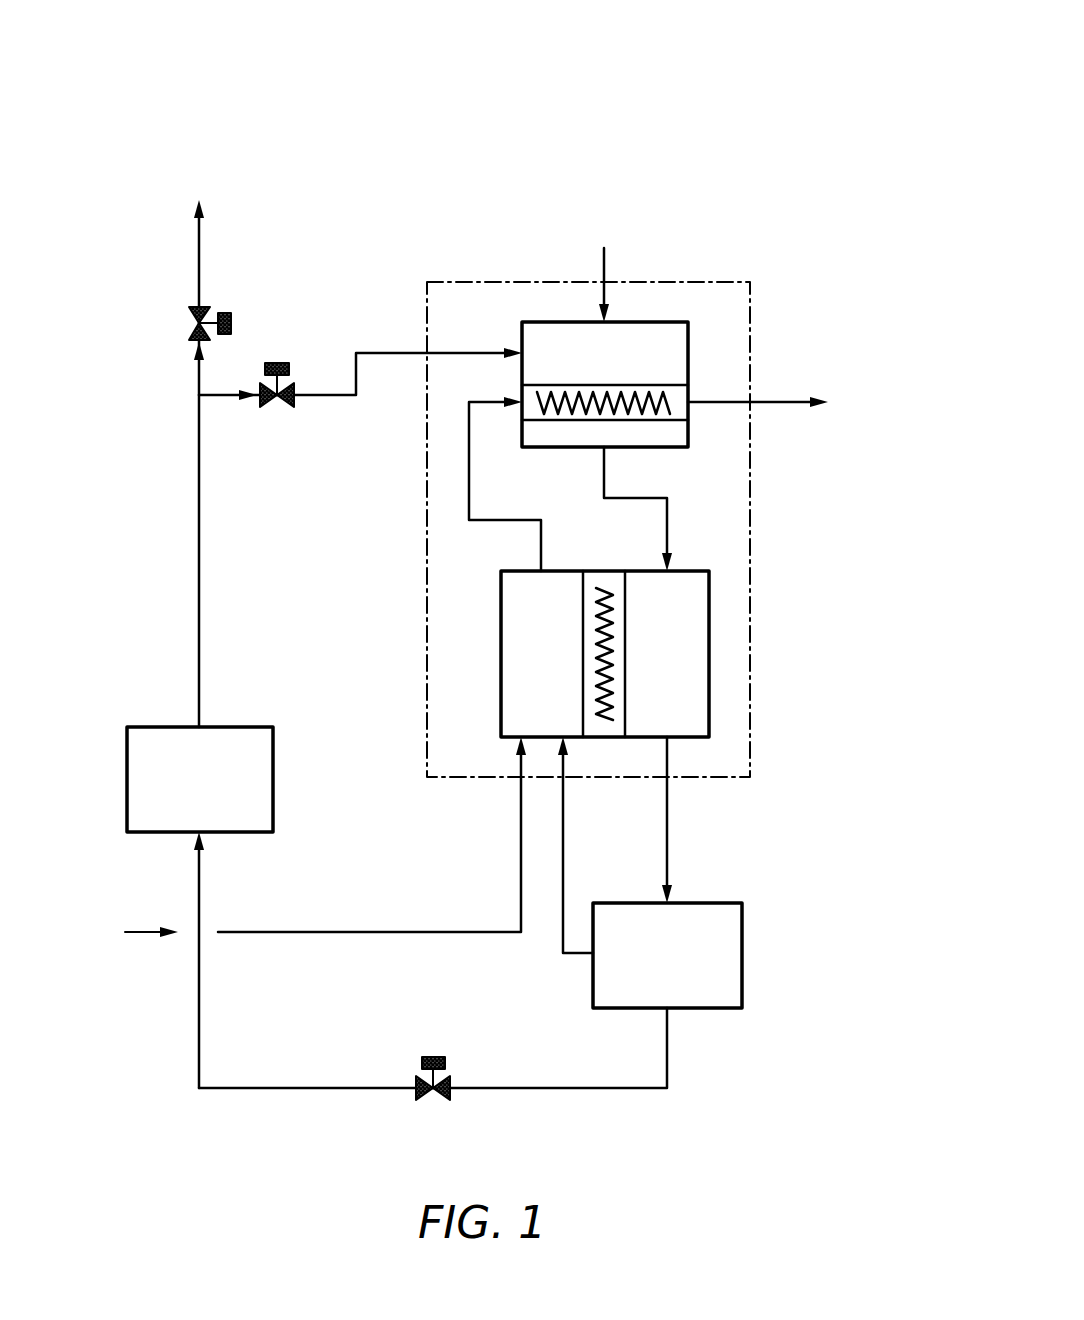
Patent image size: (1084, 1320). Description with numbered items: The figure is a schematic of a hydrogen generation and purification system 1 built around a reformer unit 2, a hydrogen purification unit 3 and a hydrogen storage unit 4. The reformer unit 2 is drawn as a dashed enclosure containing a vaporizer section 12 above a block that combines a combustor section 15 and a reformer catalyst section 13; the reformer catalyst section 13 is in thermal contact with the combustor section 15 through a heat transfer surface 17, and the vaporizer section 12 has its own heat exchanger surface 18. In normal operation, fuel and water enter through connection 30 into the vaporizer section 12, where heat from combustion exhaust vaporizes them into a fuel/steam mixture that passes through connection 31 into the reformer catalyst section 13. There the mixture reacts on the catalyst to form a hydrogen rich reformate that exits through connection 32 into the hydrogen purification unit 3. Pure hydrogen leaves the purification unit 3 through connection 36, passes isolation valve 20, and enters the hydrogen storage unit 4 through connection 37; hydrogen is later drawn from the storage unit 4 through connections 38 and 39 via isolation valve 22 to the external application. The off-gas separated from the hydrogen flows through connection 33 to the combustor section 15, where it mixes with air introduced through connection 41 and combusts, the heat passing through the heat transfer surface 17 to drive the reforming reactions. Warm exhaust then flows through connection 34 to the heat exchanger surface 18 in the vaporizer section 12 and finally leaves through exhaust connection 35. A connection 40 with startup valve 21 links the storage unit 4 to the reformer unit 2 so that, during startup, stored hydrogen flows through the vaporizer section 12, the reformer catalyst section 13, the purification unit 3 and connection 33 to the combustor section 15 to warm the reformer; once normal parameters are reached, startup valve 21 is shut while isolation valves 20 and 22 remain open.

The system 1 is at (718, 104).
The reformer unit 2 is at (695, 282).
The hydrogen purification unit 3 is at (718, 903).
The hydrogen storage unit 4 is at (150, 727).
The vaporizer section 12 is at (688, 353).
The reformer catalyst section 13 is at (709, 660).
The combustor section 15 is at (501, 645).
The heat transfer surface 17 is at (604, 738).
The heat exchanger surface 18 is at (688, 413).
The isolation valve 20 is at (420, 1086).
The startup valve 21 is at (277, 405).
The isolation valve 22 is at (190, 320).
The fuel and water connection 30 is at (604, 268).
The connection 31 is at (667, 522).
The connection 32 is at (667, 815).
The connection 33 is at (563, 953).
The connection 34 is at (469, 456).
The exhaust connection 35 is at (768, 402).
The connection 36 is at (667, 1052).
The connection 37 is at (199, 1020).
The connection 38 is at (199, 553).
The connection 39 is at (199, 250).
The connection 40 is at (356, 353).
The connection 41 is at (368, 932).